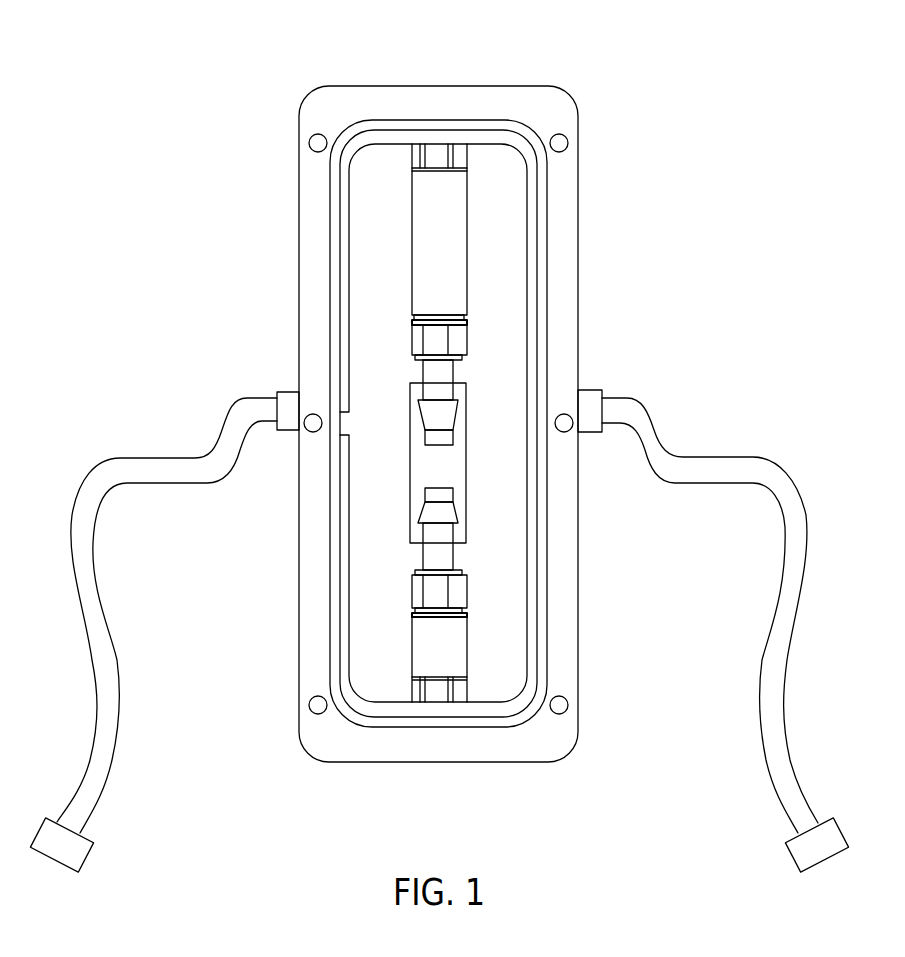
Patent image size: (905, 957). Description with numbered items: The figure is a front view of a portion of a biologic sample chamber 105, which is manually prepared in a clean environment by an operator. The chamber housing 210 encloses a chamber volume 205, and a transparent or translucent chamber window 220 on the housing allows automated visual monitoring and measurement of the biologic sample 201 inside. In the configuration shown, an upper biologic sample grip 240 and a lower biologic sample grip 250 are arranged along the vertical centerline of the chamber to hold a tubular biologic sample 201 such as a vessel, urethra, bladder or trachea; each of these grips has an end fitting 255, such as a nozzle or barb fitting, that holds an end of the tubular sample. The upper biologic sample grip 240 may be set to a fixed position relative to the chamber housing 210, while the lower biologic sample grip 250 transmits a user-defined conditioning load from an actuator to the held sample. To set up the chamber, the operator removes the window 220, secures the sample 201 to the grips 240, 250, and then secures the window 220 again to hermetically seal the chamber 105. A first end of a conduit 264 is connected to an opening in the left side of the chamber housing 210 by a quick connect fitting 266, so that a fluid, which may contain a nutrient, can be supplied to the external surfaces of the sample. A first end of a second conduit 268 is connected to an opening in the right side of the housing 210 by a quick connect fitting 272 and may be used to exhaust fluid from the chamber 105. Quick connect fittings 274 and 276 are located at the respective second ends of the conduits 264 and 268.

The biologic sample chamber 105 is at (610, 96).
The biologic sample 201 is at (410, 530).
The chamber volume 205 is at (497, 310).
The chamber housing 210 is at (299, 162).
The chamber window 220 is at (349, 247).
The upper biologic sample grip 240 is at (467, 208).
The lower biologic sample grip 250 is at (467, 635).
The end fitting 255 is at (458, 402).
The conduit 264 is at (117, 732).
The quick connect fitting 266 is at (285, 392).
The conduit 268 is at (763, 748).
The quick connect fitting 272 is at (592, 390).
The quick connect fitting 274 is at (88, 857).
The quick connect fitting 276 is at (787, 852).